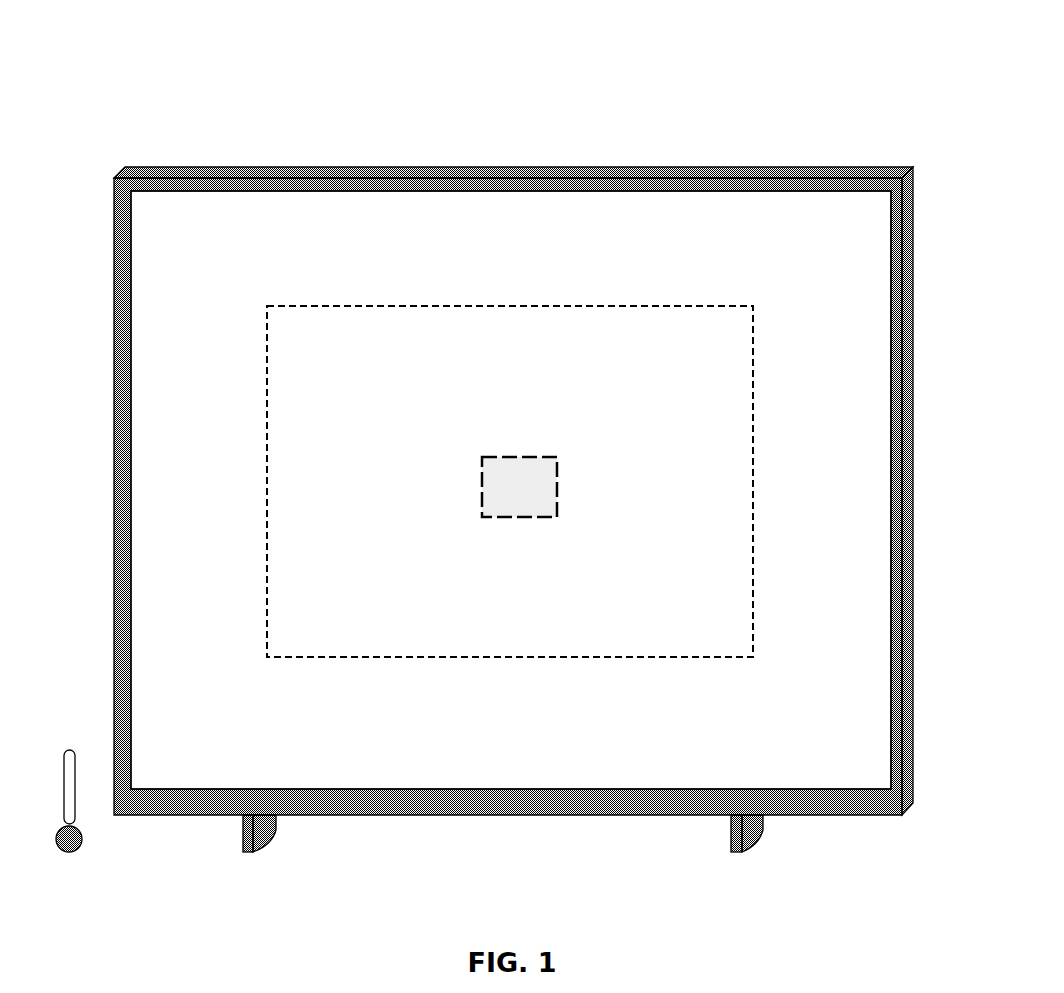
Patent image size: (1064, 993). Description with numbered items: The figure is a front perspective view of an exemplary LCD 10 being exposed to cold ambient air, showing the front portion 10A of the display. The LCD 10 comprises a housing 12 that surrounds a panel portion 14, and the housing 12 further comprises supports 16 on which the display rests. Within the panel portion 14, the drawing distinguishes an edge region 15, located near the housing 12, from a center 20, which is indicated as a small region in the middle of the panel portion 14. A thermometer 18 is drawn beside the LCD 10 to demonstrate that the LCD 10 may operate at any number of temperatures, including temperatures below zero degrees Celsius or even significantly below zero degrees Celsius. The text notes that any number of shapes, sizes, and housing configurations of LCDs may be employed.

The LCD 10 is at (404, 111).
The front portion 10A is at (186, 144).
The housing 12 is at (565, 170).
The panel portion 14 is at (630, 275).
The edge region 15 is at (161, 419).
The supports 16 is at (278, 830).
The thermometer 18 is at (84, 813).
The center 20 is at (532, 482).